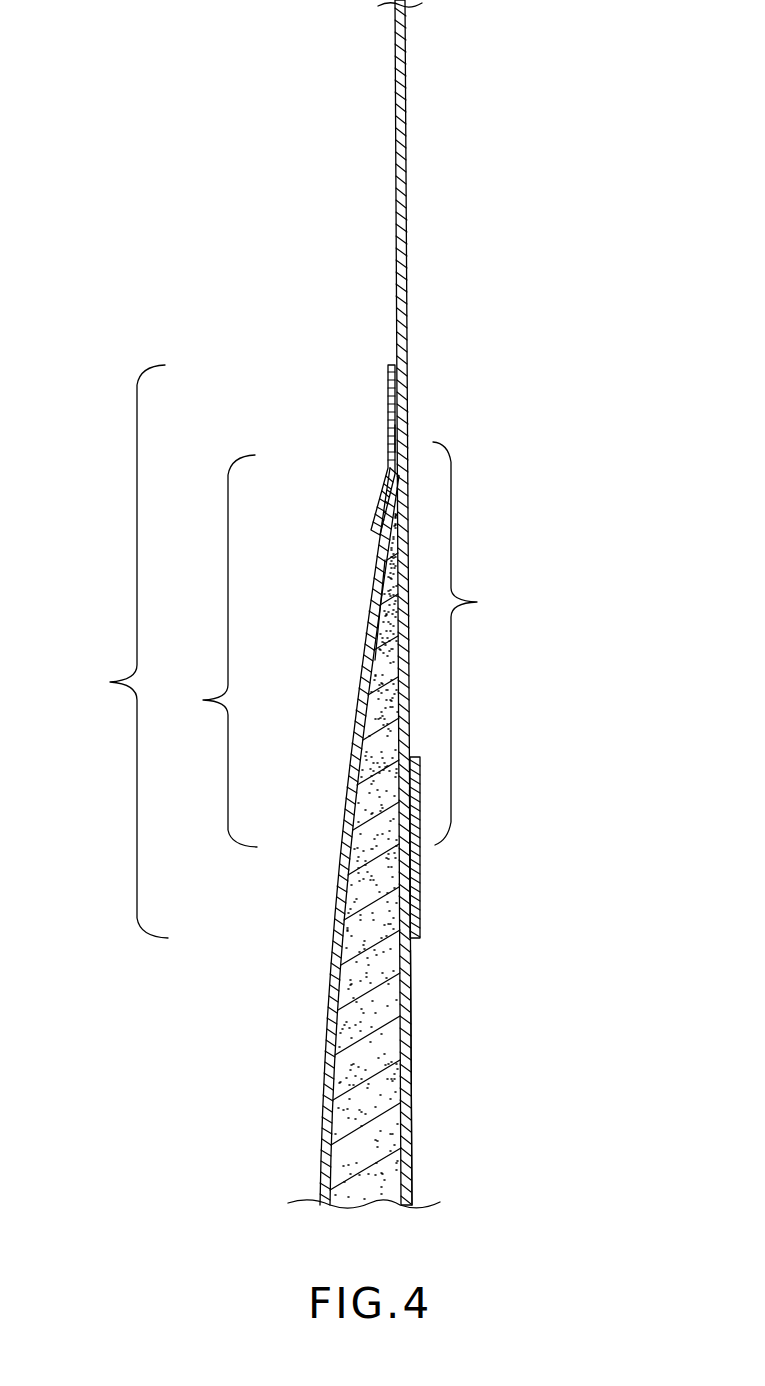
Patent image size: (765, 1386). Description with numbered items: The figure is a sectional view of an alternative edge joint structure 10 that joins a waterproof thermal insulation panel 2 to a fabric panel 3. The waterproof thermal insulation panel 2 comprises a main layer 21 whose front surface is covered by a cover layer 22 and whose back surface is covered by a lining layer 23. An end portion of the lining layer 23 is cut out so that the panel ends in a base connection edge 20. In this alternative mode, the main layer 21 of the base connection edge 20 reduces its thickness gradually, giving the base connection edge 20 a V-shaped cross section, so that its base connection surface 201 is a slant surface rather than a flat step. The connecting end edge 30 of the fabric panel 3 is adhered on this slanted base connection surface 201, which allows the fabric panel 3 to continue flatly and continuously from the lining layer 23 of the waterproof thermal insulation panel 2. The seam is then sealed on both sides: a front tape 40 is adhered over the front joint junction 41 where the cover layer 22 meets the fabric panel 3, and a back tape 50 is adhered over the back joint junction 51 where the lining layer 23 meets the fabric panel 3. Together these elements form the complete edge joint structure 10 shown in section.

The waterproof thermal insulation panel 2 is at (357, 1032).
The fabric panel 3 is at (395, 122).
The edge joint structure 10 is at (120, 651).
The base connection edge 20 is at (207, 651).
The main layer 21 is at (372, 968).
The cover layer 22 is at (330, 966).
The lining layer 23 is at (408, 1115).
The connecting end edge 30 is at (482, 643).
The front tape 40 is at (388, 383).
The front joint junction 41 is at (410, 436).
The back tape 50 is at (420, 858).
The back joint junction 51 is at (405, 848).
The base connection surface 201 is at (380, 636).